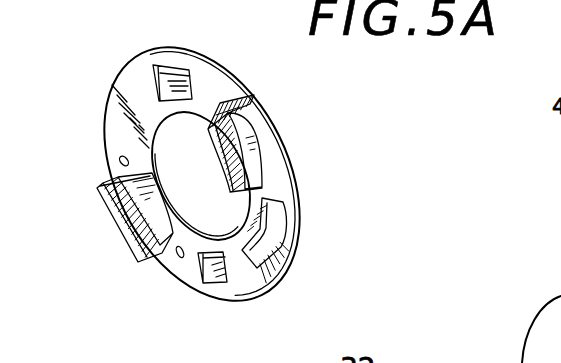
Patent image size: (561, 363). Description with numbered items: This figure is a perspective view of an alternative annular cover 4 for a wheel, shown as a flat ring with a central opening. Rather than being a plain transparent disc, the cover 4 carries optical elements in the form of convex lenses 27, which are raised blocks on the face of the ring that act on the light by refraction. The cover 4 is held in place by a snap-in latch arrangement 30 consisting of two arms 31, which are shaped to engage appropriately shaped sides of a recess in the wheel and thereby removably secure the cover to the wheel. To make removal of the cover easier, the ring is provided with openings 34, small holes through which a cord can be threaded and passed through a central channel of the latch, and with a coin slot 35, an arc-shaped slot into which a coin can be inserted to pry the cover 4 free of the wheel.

The yoke plate 4 is at (124, 75).
The convex lens 27 is at (186, 83).
The snap-in latch arrangement 30 is at (263, 163).
The arm 31 is at (223, 140).
The opening 34 is at (118, 156).
The coin slot 35 is at (272, 237).